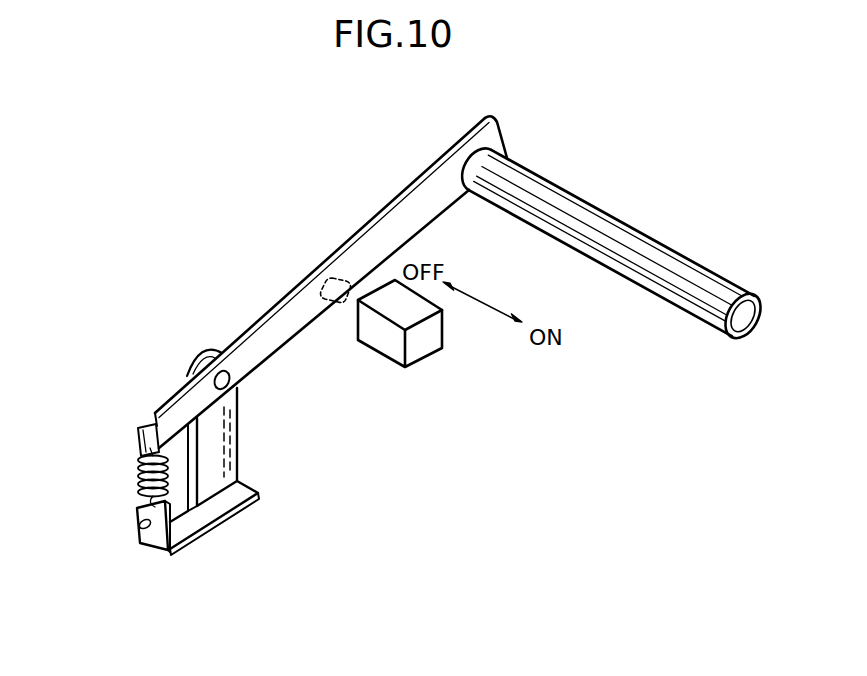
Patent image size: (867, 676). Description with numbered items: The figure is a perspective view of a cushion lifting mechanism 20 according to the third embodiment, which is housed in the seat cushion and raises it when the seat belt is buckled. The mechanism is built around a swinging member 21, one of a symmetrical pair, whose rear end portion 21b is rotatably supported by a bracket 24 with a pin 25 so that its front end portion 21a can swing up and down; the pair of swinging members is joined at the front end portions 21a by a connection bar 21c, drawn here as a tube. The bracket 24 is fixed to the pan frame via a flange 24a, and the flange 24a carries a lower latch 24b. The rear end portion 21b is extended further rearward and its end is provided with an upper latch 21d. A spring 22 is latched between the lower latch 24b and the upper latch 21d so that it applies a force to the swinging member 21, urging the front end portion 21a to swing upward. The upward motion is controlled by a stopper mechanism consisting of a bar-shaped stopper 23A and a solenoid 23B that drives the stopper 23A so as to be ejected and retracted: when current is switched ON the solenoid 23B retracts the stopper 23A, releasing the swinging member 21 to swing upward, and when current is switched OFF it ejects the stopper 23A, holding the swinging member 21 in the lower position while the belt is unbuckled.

The cushion lifting mechanism 20 is at (347, 230).
The swinging member 21 is at (436, 186).
The front end portion 21a is at (497, 140).
The rear end portion 21b is at (246, 331).
The connection bar 21c is at (651, 240).
The upper latch 21d is at (137, 434).
The spring 22 is at (139, 472).
The stopper 23A is at (347, 312).
The solenoid 23B is at (426, 347).
The bracket 24 is at (224, 460).
The flange 24a is at (214, 511).
The lower latch 24b is at (156, 540).
The pin 25 is at (227, 387).